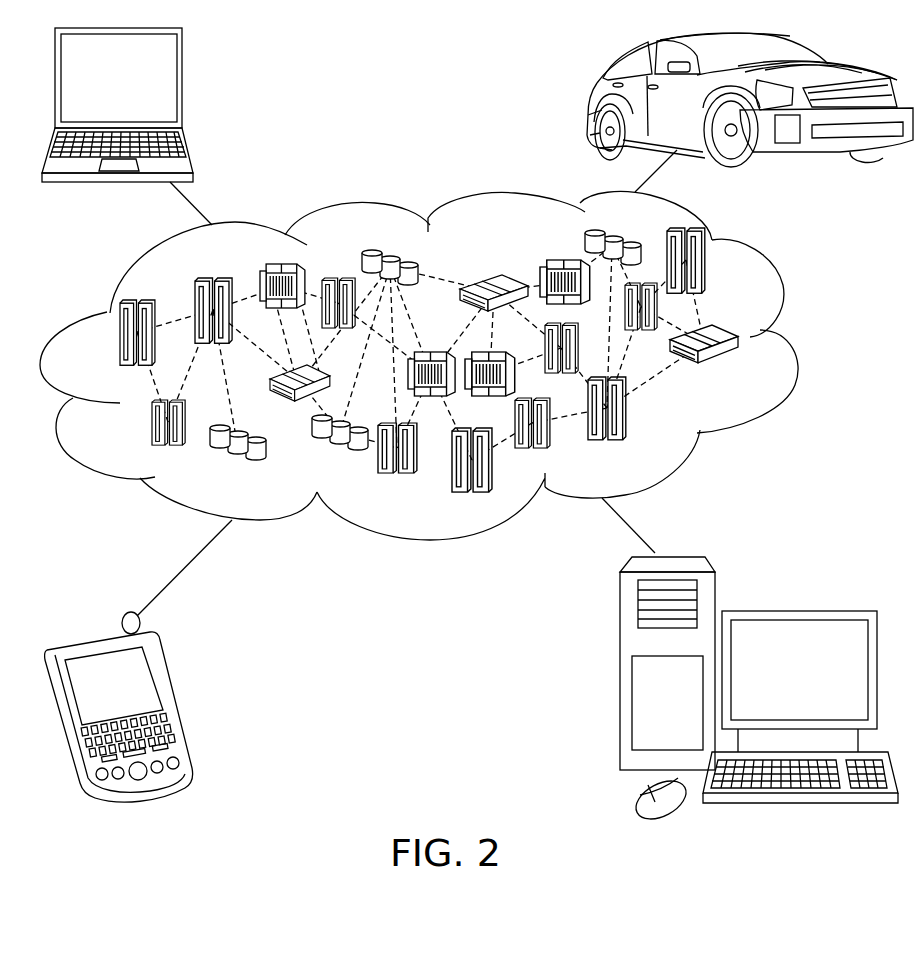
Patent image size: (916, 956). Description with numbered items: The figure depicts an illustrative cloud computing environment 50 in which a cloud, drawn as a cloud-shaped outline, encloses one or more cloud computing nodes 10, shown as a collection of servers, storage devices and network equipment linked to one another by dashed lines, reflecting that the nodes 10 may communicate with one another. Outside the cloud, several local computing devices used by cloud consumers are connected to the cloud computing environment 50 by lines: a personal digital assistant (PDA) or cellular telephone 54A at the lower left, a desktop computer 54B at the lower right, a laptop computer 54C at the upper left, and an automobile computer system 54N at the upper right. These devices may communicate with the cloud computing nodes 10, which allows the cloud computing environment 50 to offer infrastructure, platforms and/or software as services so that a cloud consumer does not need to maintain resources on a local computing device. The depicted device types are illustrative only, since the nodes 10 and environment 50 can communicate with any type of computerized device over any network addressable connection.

The cloud computing node 10 is at (746, 370).
The cloud computing environment 50 is at (798, 341).
The personal digital assistant (PDA) or cellular telephone 54A is at (176, 699).
The desktop computer 54B is at (795, 611).
The laptop computer 54C is at (183, 87).
The automobile computer system 54N is at (590, 100).